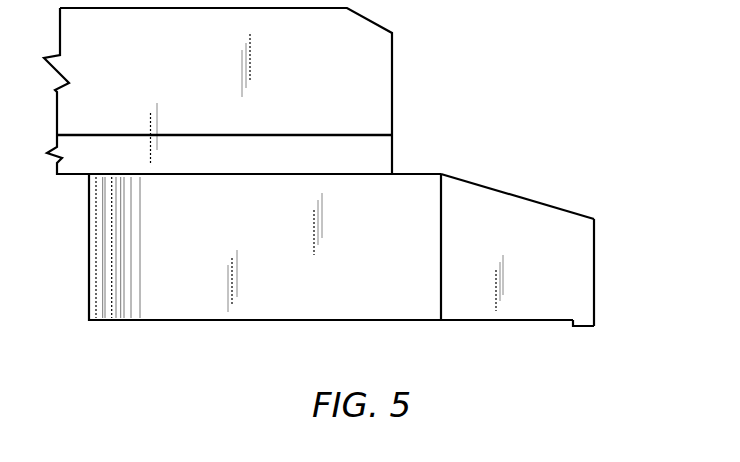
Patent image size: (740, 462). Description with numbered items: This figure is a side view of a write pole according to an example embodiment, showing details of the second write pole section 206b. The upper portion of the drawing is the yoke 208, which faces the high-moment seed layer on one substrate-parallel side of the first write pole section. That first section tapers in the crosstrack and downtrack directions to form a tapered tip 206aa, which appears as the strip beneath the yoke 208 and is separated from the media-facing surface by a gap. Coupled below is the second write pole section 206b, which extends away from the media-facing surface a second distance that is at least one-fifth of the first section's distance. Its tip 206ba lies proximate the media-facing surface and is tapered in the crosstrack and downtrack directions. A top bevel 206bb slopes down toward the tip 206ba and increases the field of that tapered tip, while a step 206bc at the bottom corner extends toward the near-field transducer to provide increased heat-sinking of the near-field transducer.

The yoke 208 is at (385, 59).
The tapered tip 206aa is at (393, 162).
The second write pole section 206b is at (302, 313).
The tip of the second write pole section 206ba is at (534, 310).
The top bevel 206bb is at (535, 198).
The step 206bc is at (583, 327).